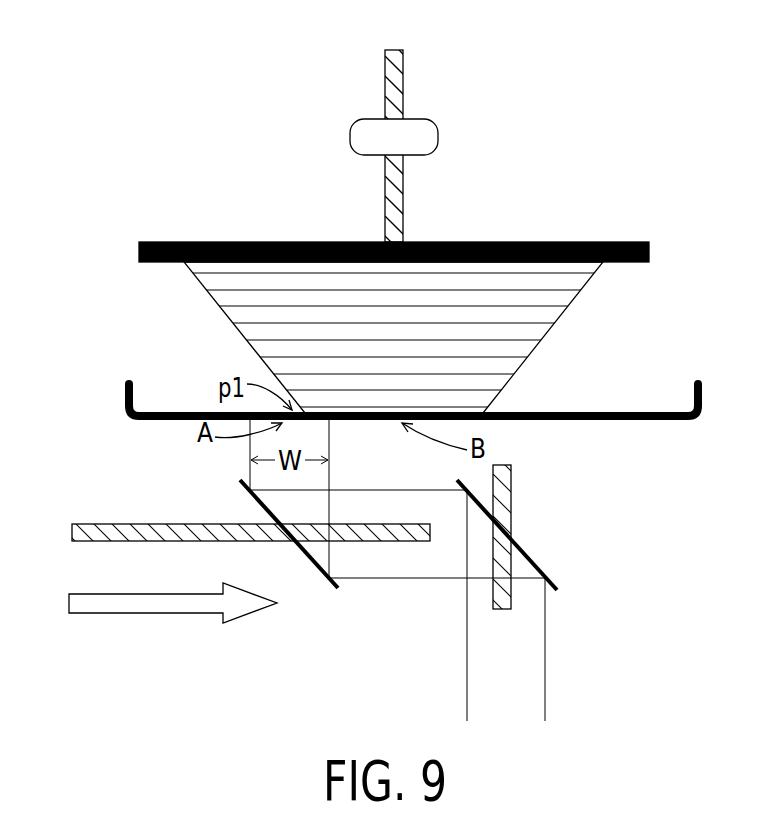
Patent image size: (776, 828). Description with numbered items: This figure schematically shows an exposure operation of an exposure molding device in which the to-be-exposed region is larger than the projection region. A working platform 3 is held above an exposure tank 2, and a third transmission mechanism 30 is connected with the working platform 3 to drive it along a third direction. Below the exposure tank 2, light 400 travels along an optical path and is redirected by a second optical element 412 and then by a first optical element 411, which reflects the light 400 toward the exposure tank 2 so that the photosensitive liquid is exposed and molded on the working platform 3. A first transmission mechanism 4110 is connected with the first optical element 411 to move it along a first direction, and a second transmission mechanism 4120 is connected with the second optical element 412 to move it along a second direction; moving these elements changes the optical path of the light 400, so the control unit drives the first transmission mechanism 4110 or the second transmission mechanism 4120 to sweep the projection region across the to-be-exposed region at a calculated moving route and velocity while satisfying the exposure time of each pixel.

The third transmission mechanism 30 is at (397, 73).
The working platform 3 is at (623, 241).
The exposure tank 2 is at (700, 381).
The first transmission mechanism 4110 is at (123, 524).
The first optical element 411 is at (332, 585).
The second transmission mechanism 4120 is at (500, 497).
The second optical element 412 is at (532, 563).
The light 400 is at (545, 698).